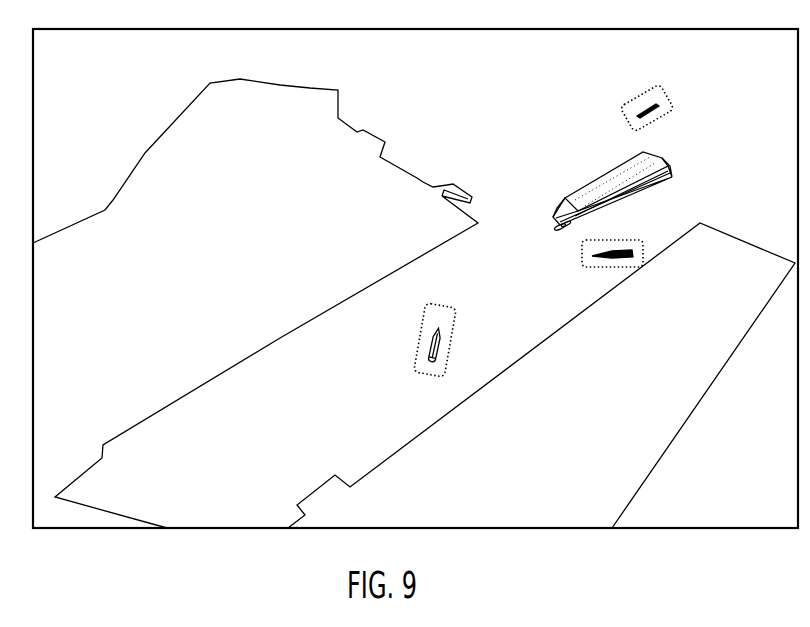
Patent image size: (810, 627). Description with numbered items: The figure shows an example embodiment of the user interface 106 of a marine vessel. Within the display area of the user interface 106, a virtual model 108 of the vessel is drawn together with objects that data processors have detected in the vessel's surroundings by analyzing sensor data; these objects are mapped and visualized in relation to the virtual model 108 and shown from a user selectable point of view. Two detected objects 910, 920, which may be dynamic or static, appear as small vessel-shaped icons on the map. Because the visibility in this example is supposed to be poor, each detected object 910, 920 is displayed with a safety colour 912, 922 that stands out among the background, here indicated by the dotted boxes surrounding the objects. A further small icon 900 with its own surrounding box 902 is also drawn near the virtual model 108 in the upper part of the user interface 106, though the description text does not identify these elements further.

The user interface 106 is at (424, 63).
The virtual model 108 is at (600, 178).
The first vessel icon 900 is at (647, 109).
The first selection box 902 is at (668, 93).
The object 910 is at (617, 257).
The safety colour 912 is at (582, 253).
The object 920 is at (431, 347).
The safety colour 922 is at (442, 302).